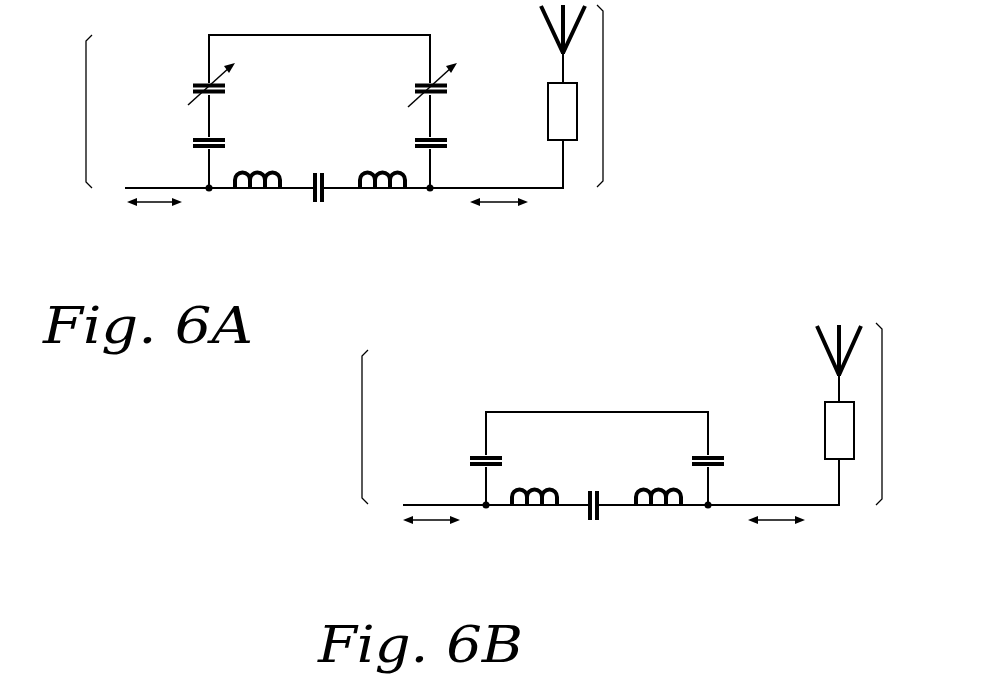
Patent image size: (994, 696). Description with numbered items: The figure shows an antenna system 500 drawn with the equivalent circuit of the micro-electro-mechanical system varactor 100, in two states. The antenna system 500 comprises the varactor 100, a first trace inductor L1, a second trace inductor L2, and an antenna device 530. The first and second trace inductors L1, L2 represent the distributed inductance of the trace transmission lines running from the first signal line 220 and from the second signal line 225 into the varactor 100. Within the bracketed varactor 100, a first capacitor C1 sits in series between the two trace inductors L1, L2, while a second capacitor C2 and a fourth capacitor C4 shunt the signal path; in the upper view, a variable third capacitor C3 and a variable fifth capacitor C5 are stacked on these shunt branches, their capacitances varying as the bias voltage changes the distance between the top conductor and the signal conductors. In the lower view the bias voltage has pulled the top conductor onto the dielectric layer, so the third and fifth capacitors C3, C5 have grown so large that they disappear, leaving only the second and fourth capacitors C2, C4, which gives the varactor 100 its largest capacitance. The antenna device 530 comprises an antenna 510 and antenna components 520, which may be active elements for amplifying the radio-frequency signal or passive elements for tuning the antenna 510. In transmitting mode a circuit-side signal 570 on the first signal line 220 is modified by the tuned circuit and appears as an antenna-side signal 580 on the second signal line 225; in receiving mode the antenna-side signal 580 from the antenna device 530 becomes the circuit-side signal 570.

In FIG. 6A, the micro-electro-mechanical system varactor 100 is at (66, 111).
In FIG. 6B, the micro-electro-mechanical system varactor 100 is at (343, 427).
In FIG. 6A, the first signal line 220 is at (160, 188).
In FIG. 6B, the first signal line 220 is at (438, 505).
In FIG. 6A, the second signal line 225 is at (478, 188).
In FIG. 6B, the second signal line 225 is at (755, 505).
In FIG. 6A, the antenna system 500 is at (152, 285).
In FIG. 6B, the antenna system 500 is at (430, 603).
In FIG. 6A, the antenna 510 is at (545, 14).
In FIG. 6B, the antenna 510 is at (821, 333).
In FIG. 6A, the antenna components 520 is at (548, 102).
In FIG. 6B, the antenna components 520 is at (825, 420).
In FIG. 6A, the antenna device 530 is at (624, 96).
In FIG. 6B, the antenna device 530 is at (901, 414).
In FIG. 6A, the circuit-side signal 570 is at (152, 206).
In FIG. 6B, the circuit-side signal 570 is at (430, 527).
In FIG. 6A, the antenna-side signal 580 is at (500, 204).
In FIG. 6B, the antenna-side signal 580 is at (777, 522).
In FIG. 6A, the first capacitor C1 is at (315, 173).
In FIG. 6B, the first capacitor C1 is at (594, 491).
In FIG. 6A, the second capacitor C2 is at (193, 140).
In FIG. 6B, the second capacitor C2 is at (470, 458).
In FIG. 6A, the third capacitor C3 is at (193, 86).
In FIG. 6A, the fourth capacitor C4 is at (447, 140).
In FIG. 6B, the fourth capacitor C4 is at (724, 458).
In FIG. 6A, the fifth capacitor C5 is at (447, 93).
In FIG. 6A, the first trace inductor L1 is at (247, 190).
In FIG. 6B, the first trace inductor L1 is at (525, 508).
In FIG. 6A, the second trace inductor L2 is at (384, 190).
In FIG. 6B, the second trace inductor L2 is at (661, 508).